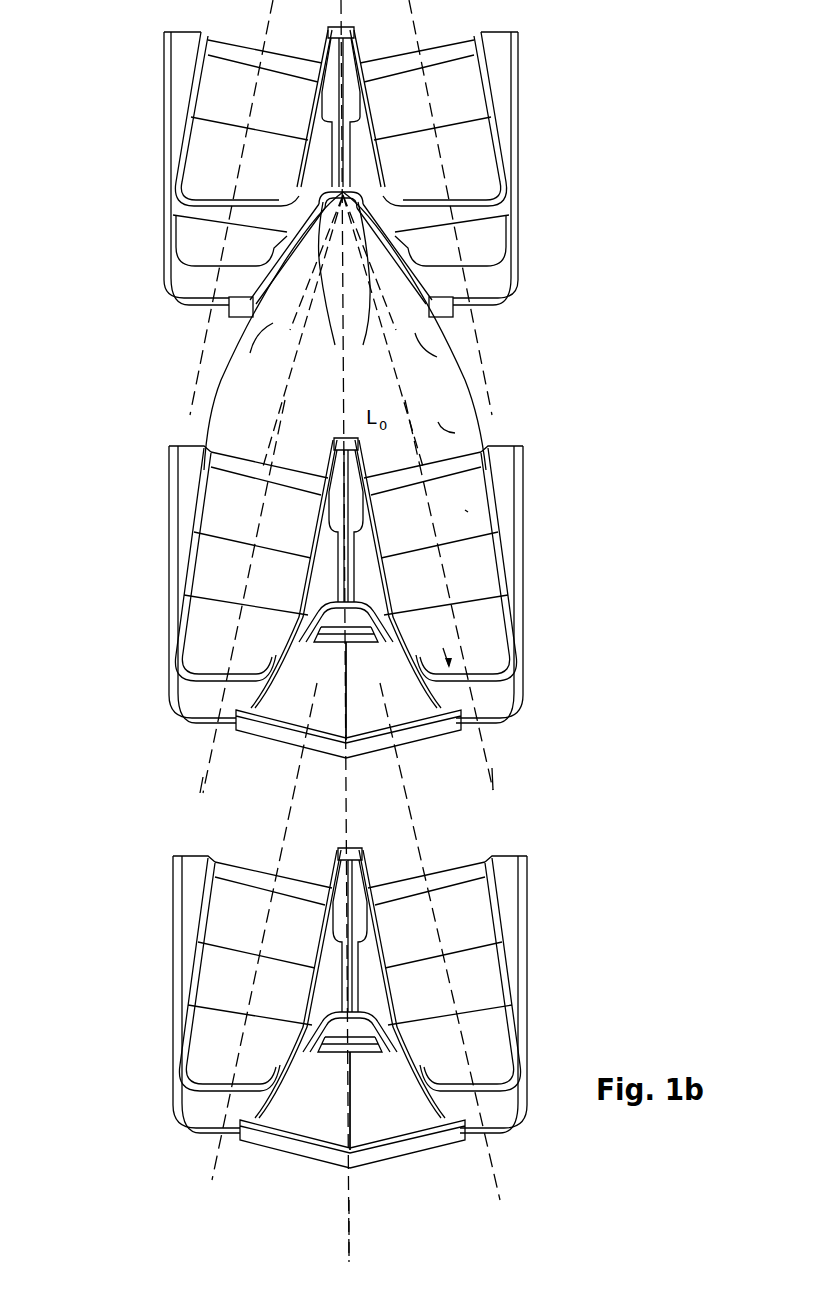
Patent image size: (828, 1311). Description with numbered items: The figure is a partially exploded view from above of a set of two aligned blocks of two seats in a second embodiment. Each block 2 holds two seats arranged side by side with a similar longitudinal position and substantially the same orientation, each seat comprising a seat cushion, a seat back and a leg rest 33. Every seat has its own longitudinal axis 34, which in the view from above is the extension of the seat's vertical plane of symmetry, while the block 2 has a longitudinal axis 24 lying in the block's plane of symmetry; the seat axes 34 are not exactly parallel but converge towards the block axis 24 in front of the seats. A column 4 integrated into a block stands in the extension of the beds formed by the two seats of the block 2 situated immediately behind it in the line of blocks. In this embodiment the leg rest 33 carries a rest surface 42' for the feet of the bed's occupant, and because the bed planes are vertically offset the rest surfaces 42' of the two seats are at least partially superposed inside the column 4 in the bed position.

The block 2 is at (130, 275).
The column 4 is at (283, 705).
The rest surface 42' is at (367, 245).
The leg rest 33 is at (265, 330).
The longitudinal axis of the seat 34 is at (203, 777).
The longitudinal axis of the block 24 is at (352, 1242).